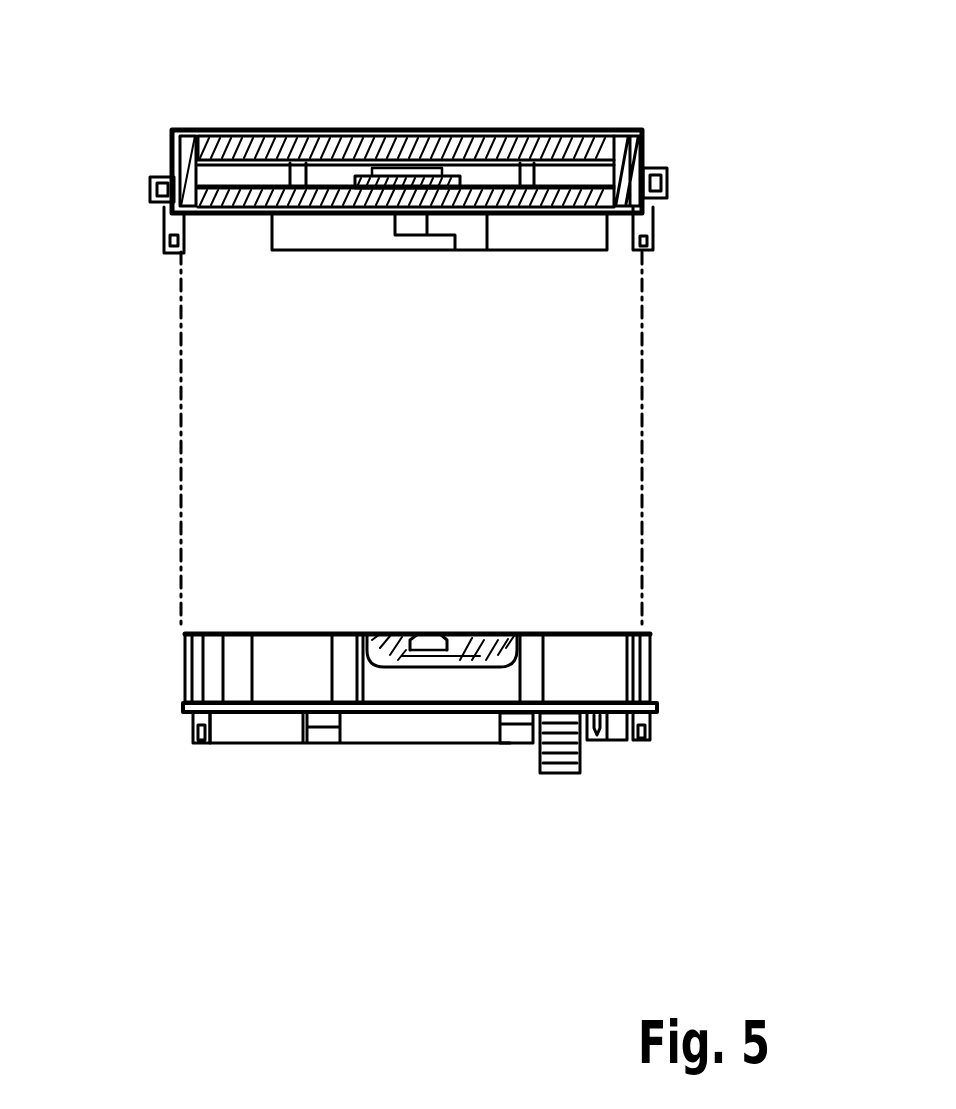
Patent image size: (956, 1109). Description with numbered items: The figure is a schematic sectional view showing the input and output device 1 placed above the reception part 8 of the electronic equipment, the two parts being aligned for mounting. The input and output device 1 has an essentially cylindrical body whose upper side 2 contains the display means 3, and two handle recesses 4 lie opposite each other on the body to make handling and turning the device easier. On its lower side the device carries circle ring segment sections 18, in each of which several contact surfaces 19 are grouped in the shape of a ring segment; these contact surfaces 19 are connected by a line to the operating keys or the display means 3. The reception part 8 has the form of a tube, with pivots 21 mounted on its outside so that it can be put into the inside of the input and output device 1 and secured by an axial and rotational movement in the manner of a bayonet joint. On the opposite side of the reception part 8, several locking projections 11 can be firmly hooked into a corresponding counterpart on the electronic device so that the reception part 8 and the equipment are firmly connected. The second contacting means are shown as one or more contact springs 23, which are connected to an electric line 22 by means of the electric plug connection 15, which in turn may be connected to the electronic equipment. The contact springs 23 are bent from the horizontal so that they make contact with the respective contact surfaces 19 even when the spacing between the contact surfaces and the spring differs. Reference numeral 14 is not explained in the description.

The input and output device 1 is at (697, 185).
The upper side 2 is at (212, 128).
The display means 3 is at (527, 137).
The handle recesses 4 is at (733, 110).
The reception part 8 is at (670, 708).
The locking projections 11 is at (683, 850).
The channel body 14 is at (442, 137).
The electric plug connection 15 is at (547, 767).
The circle ring segment sections 18 is at (362, 150).
The contact surfaces 19 is at (398, 148).
The pivots 21 is at (770, 632).
The electric line 22 is at (600, 848).
The contact springs 23 is at (428, 620).